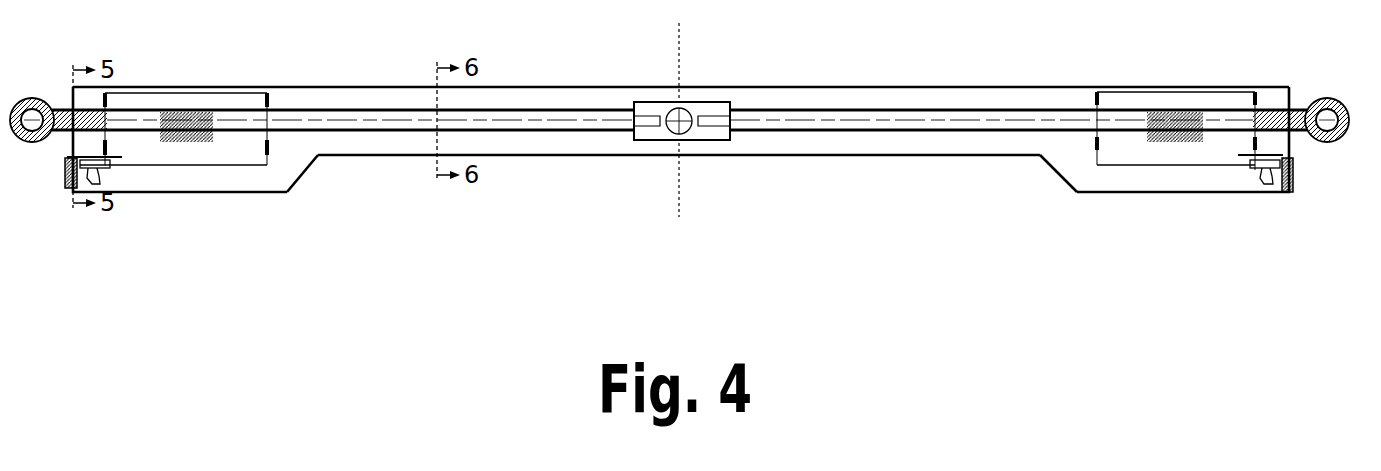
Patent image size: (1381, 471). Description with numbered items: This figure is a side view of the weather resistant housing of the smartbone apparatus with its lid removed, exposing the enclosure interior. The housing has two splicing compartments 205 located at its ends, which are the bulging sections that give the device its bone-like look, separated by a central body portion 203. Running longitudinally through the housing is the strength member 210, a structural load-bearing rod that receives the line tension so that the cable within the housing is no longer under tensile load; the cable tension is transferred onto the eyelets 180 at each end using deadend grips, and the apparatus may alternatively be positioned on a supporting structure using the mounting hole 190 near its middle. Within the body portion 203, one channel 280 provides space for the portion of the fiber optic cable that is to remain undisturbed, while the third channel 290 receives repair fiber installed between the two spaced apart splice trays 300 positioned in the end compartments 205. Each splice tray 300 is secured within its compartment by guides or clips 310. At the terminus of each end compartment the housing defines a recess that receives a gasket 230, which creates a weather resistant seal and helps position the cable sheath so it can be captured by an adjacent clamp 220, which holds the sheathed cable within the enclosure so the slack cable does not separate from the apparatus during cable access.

The eyelets 180 is at (1337, 98).
The mounting hole 190 is at (696, 97).
The body portion 203 is at (748, 157).
The splicing compartments 205 is at (187, 193).
The strength member 210 is at (539, 134).
The clamp 220 is at (1273, 194).
The gasket 230 is at (1293, 170).
The channel 280 is at (837, 143).
The third channel 290 is at (835, 100).
The splice tray 300 is at (1168, 97).
The clips 310 is at (1091, 88).